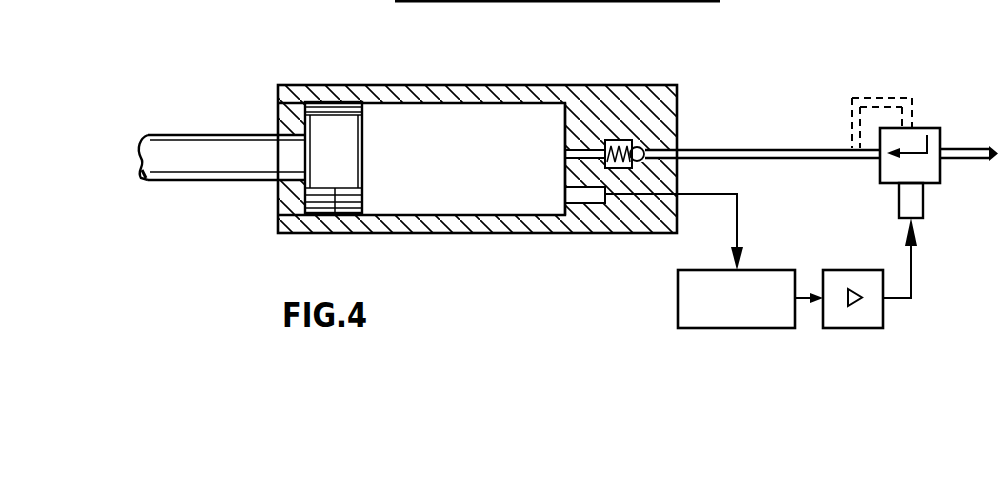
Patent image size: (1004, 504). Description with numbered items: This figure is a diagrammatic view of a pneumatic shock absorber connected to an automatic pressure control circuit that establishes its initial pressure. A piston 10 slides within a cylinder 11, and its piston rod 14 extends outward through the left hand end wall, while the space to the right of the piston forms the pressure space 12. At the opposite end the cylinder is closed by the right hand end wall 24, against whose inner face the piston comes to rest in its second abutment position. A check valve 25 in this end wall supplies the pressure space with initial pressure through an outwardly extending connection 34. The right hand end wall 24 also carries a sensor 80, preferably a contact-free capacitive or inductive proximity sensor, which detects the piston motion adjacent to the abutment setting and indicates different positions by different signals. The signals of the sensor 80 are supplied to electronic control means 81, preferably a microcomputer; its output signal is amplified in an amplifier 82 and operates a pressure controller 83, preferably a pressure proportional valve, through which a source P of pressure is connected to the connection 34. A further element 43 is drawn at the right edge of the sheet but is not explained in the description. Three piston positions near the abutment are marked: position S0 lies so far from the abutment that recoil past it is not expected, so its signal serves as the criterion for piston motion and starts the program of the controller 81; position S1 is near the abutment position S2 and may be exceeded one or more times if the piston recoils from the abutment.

The piston 10 is at (342, 215).
The cylinder 11 is at (438, 90).
The pressure space 12 is at (472, 167).
The piston rod 14 is at (215, 158).
The right hand end wall 24 is at (652, 102).
The check valve 25 is at (626, 140).
The connection 34 is at (677, 152).
The pressure source 43 is at (994, 239).
The sensor 80 is at (588, 195).
The electronic control means 81 is at (758, 285).
The amplifier 82 is at (866, 278).
The pressure controller 83 is at (893, 168).
The source of pressure P is at (969, 134).
The position S0 is at (492, 215).
The position S1 is at (535, 215).
The abutment position S2 is at (565, 215).